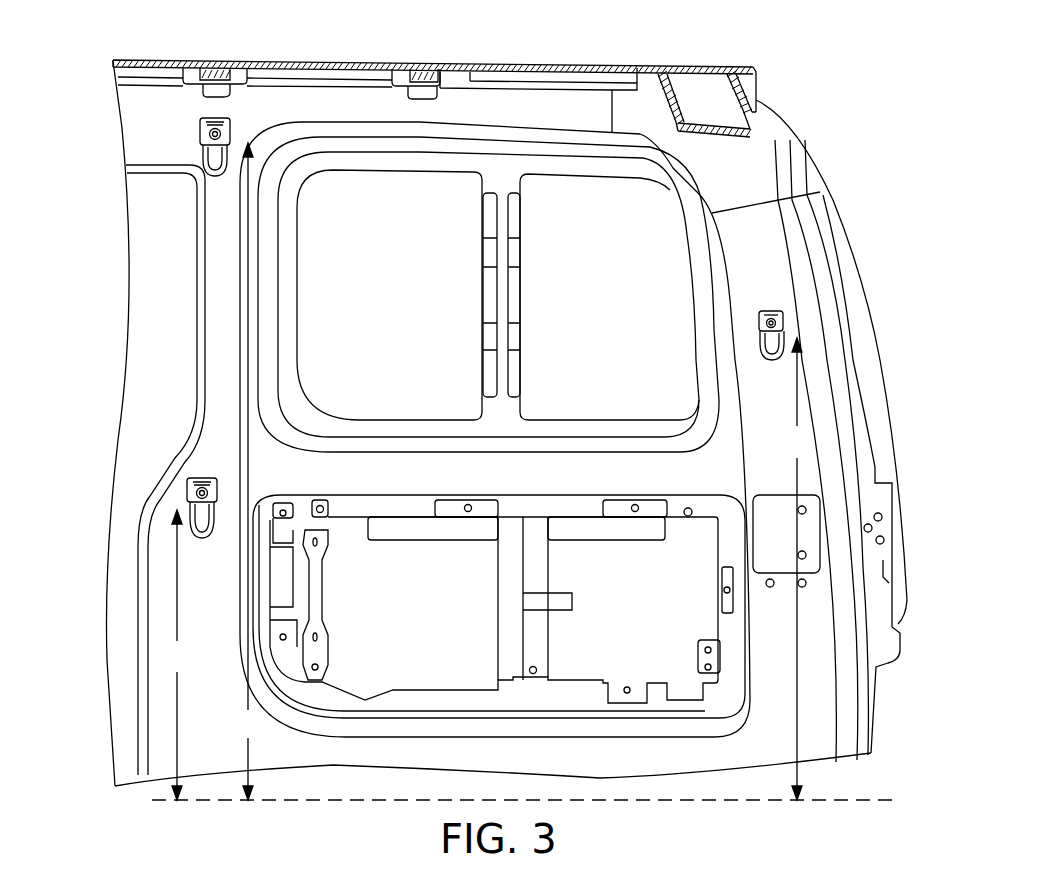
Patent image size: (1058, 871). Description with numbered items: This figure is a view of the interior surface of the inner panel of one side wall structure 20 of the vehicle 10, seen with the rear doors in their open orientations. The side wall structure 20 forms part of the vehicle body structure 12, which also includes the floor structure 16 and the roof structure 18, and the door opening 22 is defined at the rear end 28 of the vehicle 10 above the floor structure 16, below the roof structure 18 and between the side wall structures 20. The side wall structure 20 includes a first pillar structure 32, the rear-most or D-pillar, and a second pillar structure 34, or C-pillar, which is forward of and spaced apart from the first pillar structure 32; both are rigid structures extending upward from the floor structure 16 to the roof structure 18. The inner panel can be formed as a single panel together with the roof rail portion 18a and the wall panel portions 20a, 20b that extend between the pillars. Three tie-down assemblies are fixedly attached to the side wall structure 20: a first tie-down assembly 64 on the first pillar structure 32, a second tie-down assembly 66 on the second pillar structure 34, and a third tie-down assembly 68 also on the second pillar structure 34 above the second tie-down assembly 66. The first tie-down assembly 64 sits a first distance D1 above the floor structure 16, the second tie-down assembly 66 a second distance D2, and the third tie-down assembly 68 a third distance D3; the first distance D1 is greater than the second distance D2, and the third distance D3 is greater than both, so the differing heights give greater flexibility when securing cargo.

The vehicle 10 is at (716, 40).
The vehicle body structure 12 is at (117, 128).
The floor structure 16 is at (867, 800).
The roof structure 18 is at (592, 66).
The roof rail portion 18a is at (537, 112).
The side wall structure 20 is at (461, 105).
The wall panel portion 20a is at (617, 222).
The wall panel portion 20b is at (578, 468).
The door opening 22 is at (833, 423).
The rear end 28 is at (908, 607).
The first pillar structure 32 is at (757, 260).
The second pillar structure 34 is at (222, 328).
The first tie-down assembly 64 is at (784, 320).
The second tie-down assembly 66 is at (186, 493).
The third tie-down assembly 68 is at (199, 134).
The first distance D1 is at (797, 569).
The second distance D2 is at (174, 655).
The third distance D3 is at (247, 471).